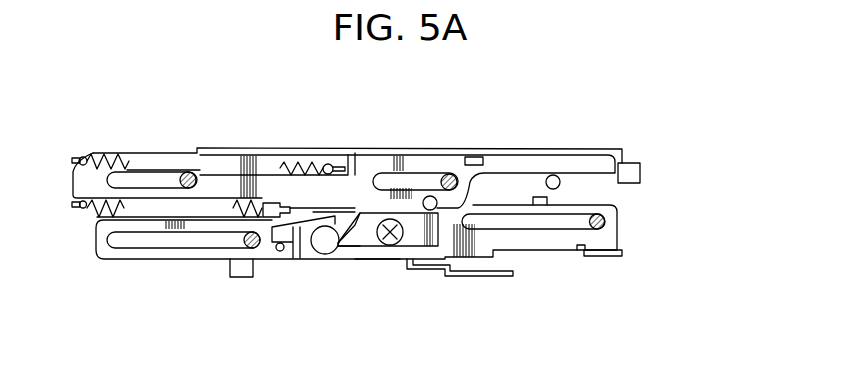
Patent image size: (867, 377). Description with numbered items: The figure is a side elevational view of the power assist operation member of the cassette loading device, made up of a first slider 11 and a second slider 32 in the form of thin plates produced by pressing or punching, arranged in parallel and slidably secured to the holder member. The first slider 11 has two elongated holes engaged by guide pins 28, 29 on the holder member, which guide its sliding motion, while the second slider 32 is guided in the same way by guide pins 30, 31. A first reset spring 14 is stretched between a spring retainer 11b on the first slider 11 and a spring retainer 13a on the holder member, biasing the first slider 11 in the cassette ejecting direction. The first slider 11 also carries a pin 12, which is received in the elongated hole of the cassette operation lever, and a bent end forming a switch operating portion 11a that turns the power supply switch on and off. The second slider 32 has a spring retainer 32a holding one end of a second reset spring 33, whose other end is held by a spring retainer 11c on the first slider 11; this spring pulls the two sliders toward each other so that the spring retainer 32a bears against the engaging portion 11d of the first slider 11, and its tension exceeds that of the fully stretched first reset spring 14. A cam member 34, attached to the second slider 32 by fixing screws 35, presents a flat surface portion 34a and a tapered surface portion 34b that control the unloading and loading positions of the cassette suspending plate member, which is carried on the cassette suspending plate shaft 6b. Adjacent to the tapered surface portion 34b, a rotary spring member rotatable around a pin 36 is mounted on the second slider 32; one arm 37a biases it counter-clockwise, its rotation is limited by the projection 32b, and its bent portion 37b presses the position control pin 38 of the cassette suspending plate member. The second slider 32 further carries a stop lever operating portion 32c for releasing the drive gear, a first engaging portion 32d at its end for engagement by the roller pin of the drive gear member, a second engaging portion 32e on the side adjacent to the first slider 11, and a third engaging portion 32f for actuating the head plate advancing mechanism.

The cassette suspending plate shaft 6b is at (560, 181).
The first slider 11 is at (438, 157).
The switch operating portion 11a is at (638, 170).
The spring retainer 11b is at (347, 163).
The spring retainer 11c is at (72, 205).
The engaging portion 11d is at (263, 202).
The pin 12 is at (487, 162).
The spring retainer 13a is at (79, 162).
The first reset spring 14 is at (120, 154).
The guide pin 28 is at (185, 176).
The guide pin 29 is at (454, 177).
The guide pin 30 is at (244, 241).
The guide pin 31 is at (607, 224).
The second slider 32 is at (130, 260).
The spring retainer 32a is at (297, 208).
The projection 32b is at (280, 252).
The stop lever operating portion 32c is at (513, 280).
The first engaging portion 32d is at (613, 258).
The second engaging portion 32e is at (536, 196).
The third engaging portion 32f is at (240, 278).
The second reset spring 33 is at (104, 258).
The cam member 34 is at (411, 266).
The flat surface portion 34a is at (366, 220).
The tapered surface portion 34b is at (352, 262).
The fixing screw 35 is at (405, 236).
The pin 36 is at (328, 254).
The arm 37a is at (370, 262).
The bent portion 37b is at (293, 256).
The position control pin 38 is at (432, 196).